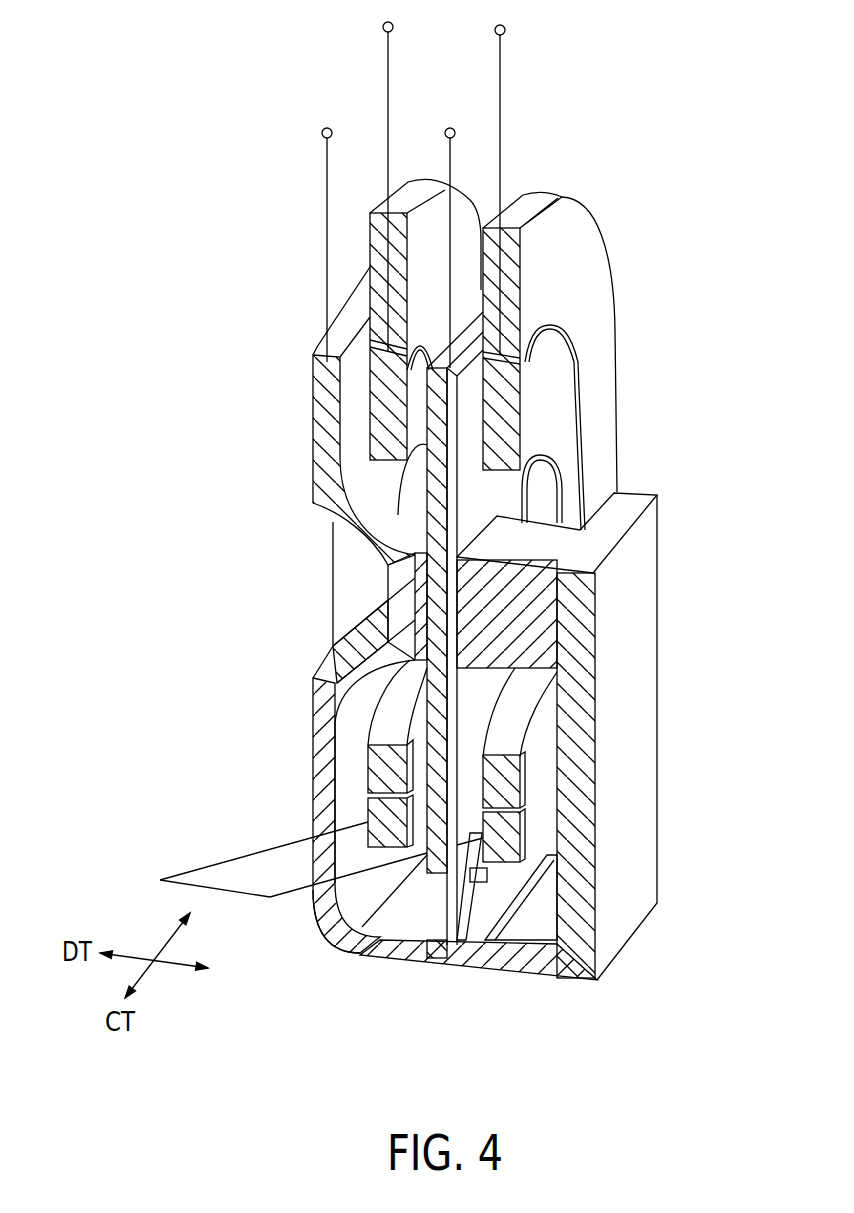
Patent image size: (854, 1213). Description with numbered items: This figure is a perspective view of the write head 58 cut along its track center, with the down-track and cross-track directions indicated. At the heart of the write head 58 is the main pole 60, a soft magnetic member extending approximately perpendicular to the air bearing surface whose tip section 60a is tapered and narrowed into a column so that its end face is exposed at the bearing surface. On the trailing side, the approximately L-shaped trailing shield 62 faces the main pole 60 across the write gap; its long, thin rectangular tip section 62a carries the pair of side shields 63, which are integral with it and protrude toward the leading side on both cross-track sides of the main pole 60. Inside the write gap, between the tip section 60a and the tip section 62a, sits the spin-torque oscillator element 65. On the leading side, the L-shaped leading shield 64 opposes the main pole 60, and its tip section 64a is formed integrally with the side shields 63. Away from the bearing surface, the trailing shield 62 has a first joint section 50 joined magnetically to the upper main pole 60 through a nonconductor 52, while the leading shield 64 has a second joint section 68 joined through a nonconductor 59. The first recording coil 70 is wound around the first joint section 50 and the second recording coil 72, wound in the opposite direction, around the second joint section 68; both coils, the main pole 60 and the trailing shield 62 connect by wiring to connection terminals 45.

The connection terminal 45 is at (383, 28).
The first joint section 50 is at (393, 603).
The nonconductor 52 is at (393, 577).
The write head 58 is at (270, 280).
The nonconductor 59 is at (550, 641).
The main pole 60 is at (437, 897).
The tip section 60a is at (449, 962).
The trailing shield 62 is at (306, 757).
The tip section 62a is at (357, 945).
The side shields 63 is at (497, 900).
The leading shield 64 is at (648, 782).
The tip section 64a is at (503, 965).
The spin-torque oscillator element 65 is at (443, 892).
The second joint section 68 is at (530, 612).
The first recording coil 70 is at (368, 236).
The second recording coil 72 is at (585, 245).